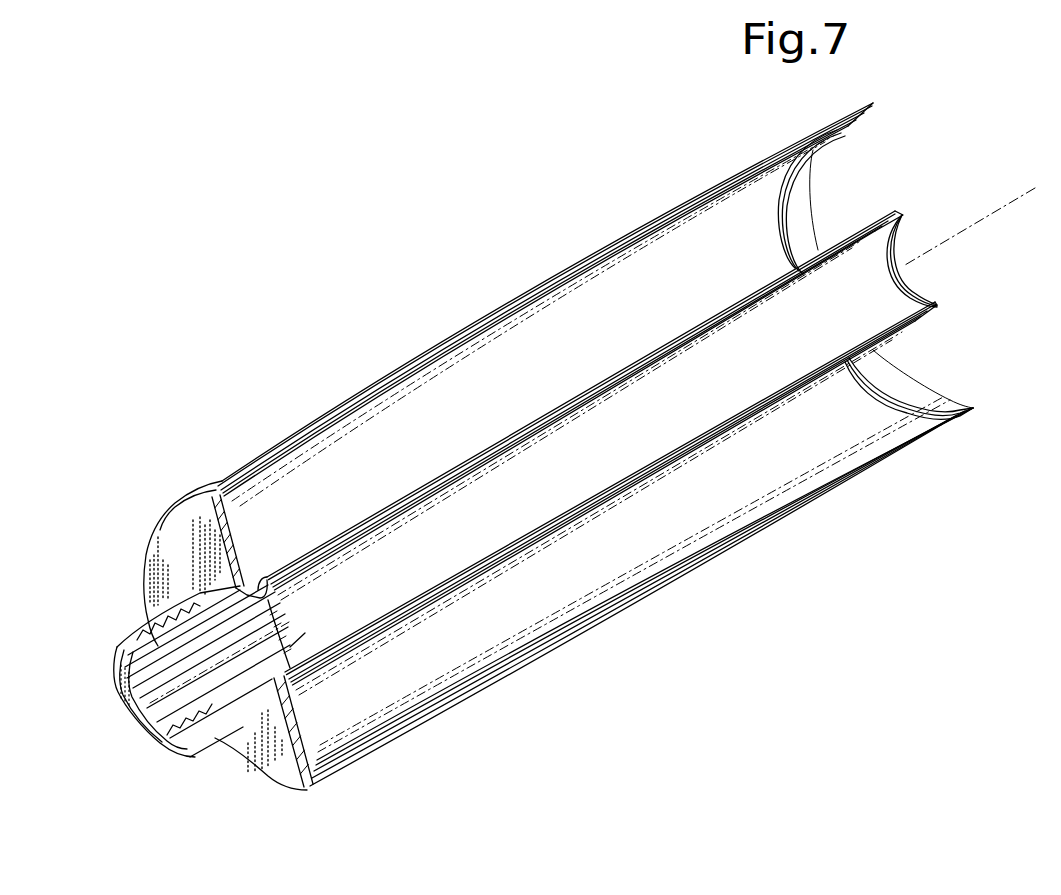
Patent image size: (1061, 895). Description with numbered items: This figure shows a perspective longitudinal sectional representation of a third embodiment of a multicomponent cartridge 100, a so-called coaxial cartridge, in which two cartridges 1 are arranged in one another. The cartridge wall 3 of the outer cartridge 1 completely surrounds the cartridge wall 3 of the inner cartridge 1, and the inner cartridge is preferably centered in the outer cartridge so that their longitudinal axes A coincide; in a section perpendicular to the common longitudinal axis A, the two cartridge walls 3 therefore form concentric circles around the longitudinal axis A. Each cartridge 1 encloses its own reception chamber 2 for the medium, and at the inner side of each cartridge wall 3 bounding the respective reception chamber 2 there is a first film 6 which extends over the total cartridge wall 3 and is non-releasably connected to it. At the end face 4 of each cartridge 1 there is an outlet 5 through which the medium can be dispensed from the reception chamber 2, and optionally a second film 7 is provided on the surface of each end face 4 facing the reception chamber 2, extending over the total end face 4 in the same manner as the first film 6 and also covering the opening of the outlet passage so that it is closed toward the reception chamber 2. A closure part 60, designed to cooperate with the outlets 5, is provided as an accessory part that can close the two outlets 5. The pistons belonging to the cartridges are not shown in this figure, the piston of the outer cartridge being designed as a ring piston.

The multicomponent cartridge 100 is at (366, 245).
The cartridge 1 is at (541, 270).
The reception chamber 2 is at (500, 396).
The cartridge wall 3 is at (447, 350).
The end face 4 is at (247, 757).
The outlet 5 is at (162, 660).
The first film 6 is at (846, 346).
The second film 7 is at (237, 535).
The closure part 60 is at (123, 711).
The longitudinal axis A is at (970, 226).